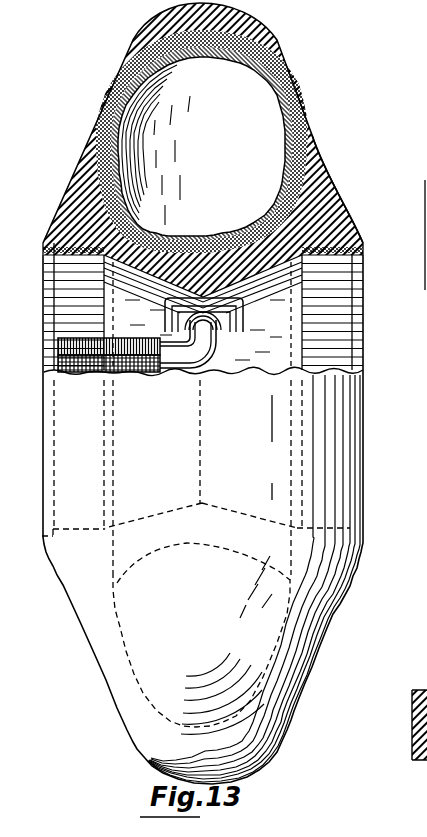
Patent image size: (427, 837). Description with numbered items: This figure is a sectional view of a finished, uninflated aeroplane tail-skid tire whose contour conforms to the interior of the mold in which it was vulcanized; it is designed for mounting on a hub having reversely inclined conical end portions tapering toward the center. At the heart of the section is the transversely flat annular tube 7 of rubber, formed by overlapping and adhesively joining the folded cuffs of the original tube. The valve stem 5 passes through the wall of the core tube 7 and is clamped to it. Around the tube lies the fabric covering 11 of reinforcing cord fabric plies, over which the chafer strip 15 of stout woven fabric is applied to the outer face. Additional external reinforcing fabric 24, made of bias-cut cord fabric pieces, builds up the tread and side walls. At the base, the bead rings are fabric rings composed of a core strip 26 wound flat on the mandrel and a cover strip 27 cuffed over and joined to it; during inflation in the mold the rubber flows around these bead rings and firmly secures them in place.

The valve stem 5 is at (222, 346).
The annular tube 7 is at (282, 114).
The fabric covering 11 is at (290, 147).
The chafer strip 15 is at (259, 271).
The external reinforcing fabric 24 is at (313, 134).
The core strip 26 is at (351, 294).
The cover strip 27 is at (351, 189).